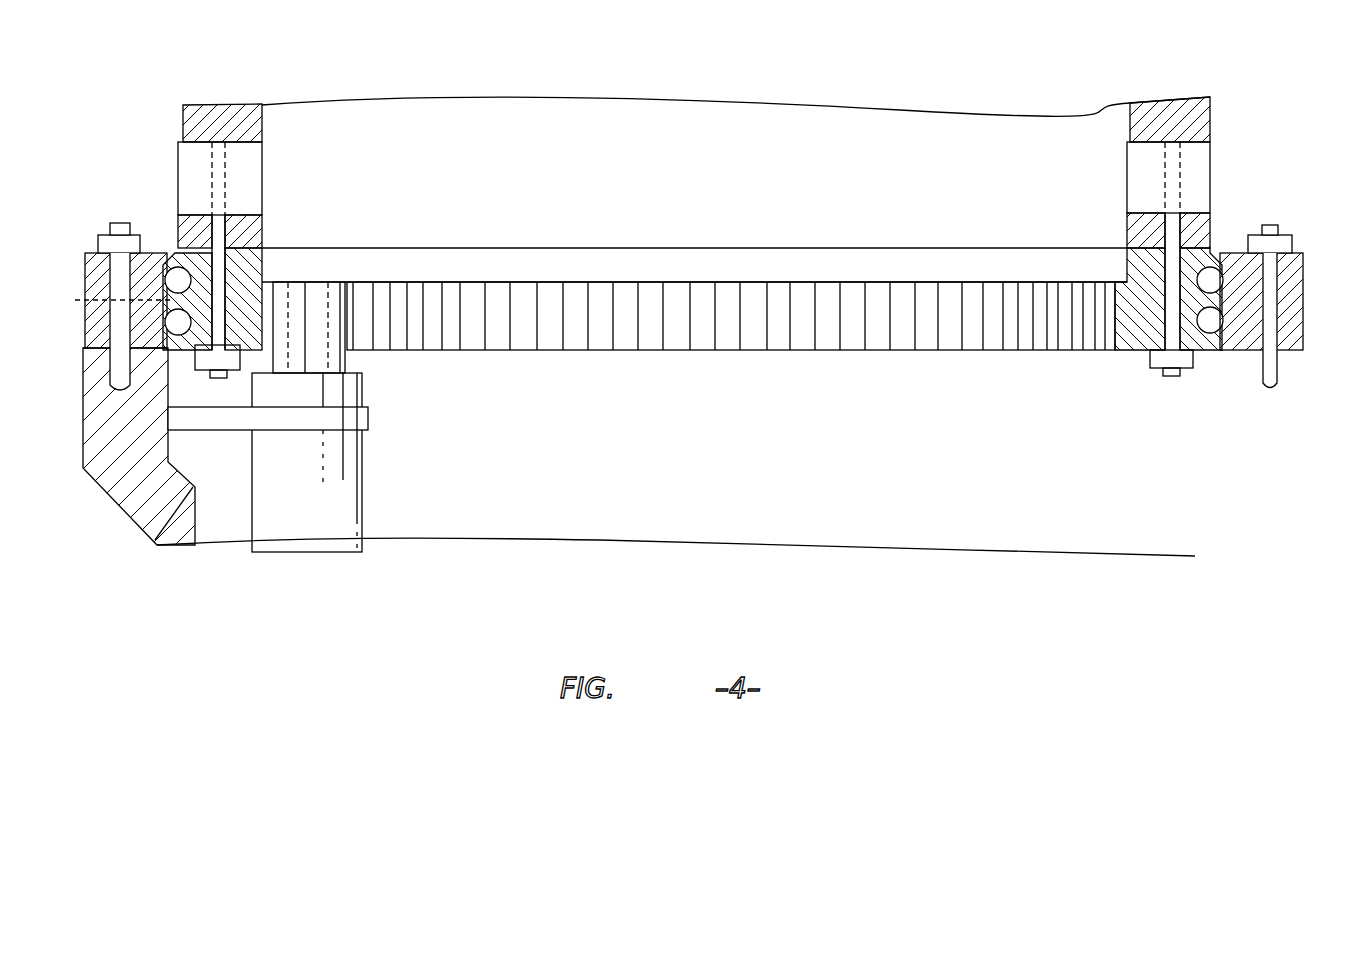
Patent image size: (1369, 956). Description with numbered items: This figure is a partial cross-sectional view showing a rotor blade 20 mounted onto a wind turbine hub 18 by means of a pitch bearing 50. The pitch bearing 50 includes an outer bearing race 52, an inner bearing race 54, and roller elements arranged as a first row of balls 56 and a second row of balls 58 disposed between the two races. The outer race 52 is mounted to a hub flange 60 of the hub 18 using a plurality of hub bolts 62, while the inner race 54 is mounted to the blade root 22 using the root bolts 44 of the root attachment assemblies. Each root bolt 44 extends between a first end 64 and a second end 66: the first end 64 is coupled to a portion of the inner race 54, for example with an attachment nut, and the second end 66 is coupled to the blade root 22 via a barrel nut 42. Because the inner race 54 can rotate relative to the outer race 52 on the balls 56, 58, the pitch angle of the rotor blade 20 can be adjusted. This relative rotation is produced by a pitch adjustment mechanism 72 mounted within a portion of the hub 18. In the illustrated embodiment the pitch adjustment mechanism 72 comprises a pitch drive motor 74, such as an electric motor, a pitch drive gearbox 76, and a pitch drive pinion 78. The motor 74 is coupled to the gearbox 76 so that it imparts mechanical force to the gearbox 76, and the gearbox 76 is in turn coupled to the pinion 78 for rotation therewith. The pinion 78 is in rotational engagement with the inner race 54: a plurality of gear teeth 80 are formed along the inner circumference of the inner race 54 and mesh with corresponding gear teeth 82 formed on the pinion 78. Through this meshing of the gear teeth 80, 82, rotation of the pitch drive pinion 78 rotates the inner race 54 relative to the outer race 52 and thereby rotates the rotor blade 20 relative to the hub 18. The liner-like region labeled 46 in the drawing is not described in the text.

The hub 18 is at (128, 518).
The rotor blade 20 is at (895, 110).
The blade root 22 is at (1205, 105).
The barrel nut 42 is at (178, 155).
The root bolt 44 is at (217, 235).
The liner 46 is at (548, 252).
The pitch bearing 50 is at (970, 352).
The outer bearing race 52 is at (1290, 272).
The inner bearing race 54 is at (1137, 352).
The first row of balls 56 is at (1212, 282).
The second row of balls 58 is at (1212, 322).
The hub flange 60 is at (95, 430).
The hub bolt 62 is at (120, 275).
The first end 64 is at (233, 373).
The second end 66 is at (228, 177).
The pitch adjustment mechanism 72 is at (362, 512).
The pitch drive motor 74 is at (305, 527).
The pitch drive gearbox 76 is at (345, 392).
The pitch drive pinion 78 is at (347, 358).
The gear teeth 80 is at (563, 323).
The gear teeth 82 is at (320, 303).